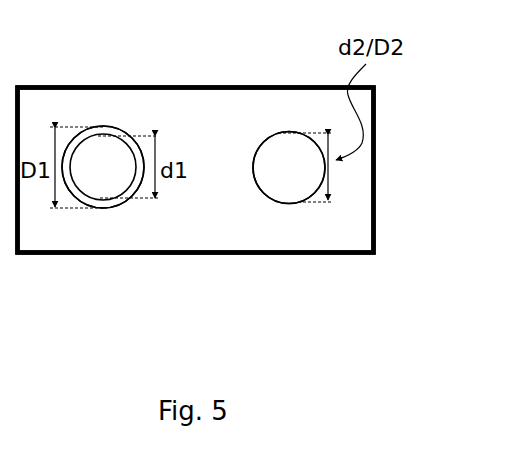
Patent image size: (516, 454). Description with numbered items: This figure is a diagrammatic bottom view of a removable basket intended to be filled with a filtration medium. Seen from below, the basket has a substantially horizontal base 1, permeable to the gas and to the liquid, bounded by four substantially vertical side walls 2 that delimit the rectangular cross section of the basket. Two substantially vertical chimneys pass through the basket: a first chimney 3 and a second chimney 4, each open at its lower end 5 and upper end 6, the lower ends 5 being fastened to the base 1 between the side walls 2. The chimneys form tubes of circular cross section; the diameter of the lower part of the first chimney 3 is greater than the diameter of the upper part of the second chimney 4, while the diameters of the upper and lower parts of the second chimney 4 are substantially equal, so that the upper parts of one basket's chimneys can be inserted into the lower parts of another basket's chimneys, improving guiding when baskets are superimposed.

The base 1 is at (165, 223).
The side walls 2 is at (180, 82).
The first chimney 3 is at (66, 121).
The second chimney 4 is at (267, 127).
The lower end 5 is at (102, 214).
The upper end 6 is at (103, 127).